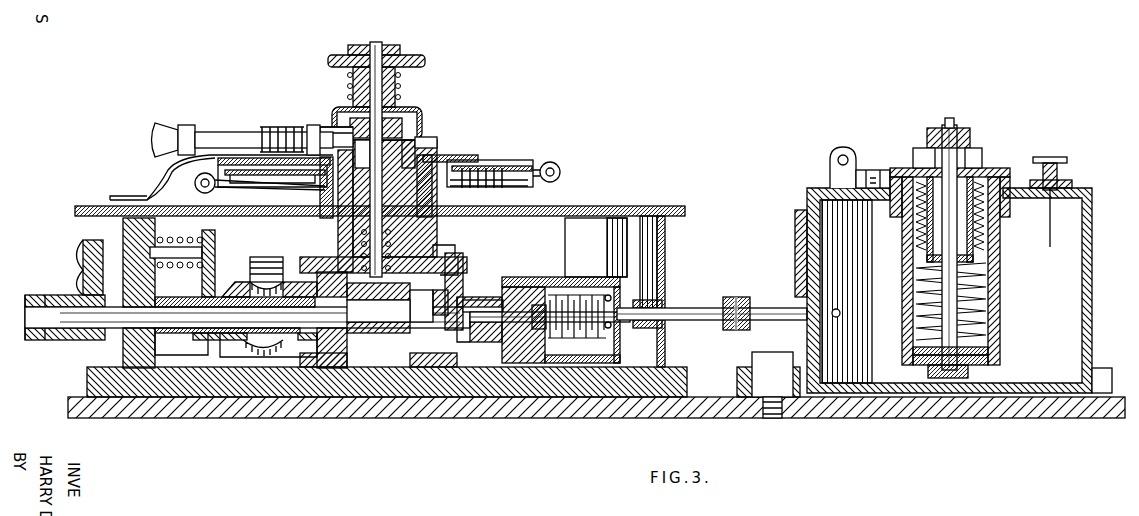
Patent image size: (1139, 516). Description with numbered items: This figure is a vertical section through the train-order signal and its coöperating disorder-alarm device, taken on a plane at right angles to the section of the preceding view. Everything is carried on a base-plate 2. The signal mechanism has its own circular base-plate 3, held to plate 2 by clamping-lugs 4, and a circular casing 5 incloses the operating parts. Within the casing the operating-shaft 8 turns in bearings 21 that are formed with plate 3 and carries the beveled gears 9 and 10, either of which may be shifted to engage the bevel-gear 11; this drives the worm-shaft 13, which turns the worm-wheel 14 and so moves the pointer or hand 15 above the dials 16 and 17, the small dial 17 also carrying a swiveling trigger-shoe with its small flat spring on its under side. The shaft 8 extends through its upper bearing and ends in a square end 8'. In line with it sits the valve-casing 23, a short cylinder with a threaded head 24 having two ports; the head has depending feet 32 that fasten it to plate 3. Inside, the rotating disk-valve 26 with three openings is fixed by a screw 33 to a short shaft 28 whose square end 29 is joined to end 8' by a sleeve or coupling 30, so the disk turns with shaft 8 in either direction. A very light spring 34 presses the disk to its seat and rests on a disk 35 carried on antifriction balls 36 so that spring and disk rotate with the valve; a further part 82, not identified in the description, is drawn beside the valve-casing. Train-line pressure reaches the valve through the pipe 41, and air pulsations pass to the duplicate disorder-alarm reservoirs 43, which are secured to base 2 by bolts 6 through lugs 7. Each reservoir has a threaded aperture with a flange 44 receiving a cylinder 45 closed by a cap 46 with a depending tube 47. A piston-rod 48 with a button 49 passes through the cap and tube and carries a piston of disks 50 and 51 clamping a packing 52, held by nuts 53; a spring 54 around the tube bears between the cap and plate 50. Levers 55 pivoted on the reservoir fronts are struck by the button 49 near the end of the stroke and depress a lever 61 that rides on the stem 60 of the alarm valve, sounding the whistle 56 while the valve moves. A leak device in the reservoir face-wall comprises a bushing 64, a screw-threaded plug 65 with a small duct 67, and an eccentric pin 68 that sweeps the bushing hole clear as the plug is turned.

The base-plate 2 is at (842, 419).
The independent base-plate 3 is at (675, 392).
The clamping-lugs 4 is at (90, 374).
The casing 5 is at (665, 254).
The bolts 6 is at (772, 362).
The lugs or ears 7 is at (755, 366).
The operating-shaft 8 is at (247, 303).
The square end 8' is at (505, 266).
The beveled gear 9 is at (245, 292).
The beveled gear 10 is at (323, 282).
The bevel-gear 11 is at (297, 282).
The worm-shaft 13 is at (252, 258).
The worm-wheel 14 is at (460, 285).
The pointer or hand 15 is at (170, 188).
The dial 16 is at (592, 207).
The small dial 17 is at (510, 165).
The bearing 21 is at (120, 342).
The valve-casing 23 is at (580, 360).
The head 24 is at (503, 325).
The rotating disk-valve 26 is at (570, 285).
The short shaft 28 is at (512, 300).
The square end 29 is at (517, 345).
The sleeve or coupling 30 is at (486, 302).
The depending lugs or feet 32 is at (490, 355).
The screw 33 is at (546, 345).
The spring 34 is at (575, 352).
The disk 35 is at (603, 345).
The balls 36 is at (620, 300).
The pipe 41 is at (680, 312).
The disorder-alarm reservoirs 43 is at (818, 190).
The flange 44 is at (900, 215).
The cylinder 45 is at (1000, 318).
The cap 46 is at (1005, 172).
The depending tube 47 is at (1000, 249).
The piston-rod 48 is at (955, 140).
The button 49 is at (958, 125).
The disk 50 is at (988, 352).
The disk 51 is at (968, 372).
The packing 52 is at (990, 360).
The nuts 53 is at (928, 373).
The spring 54 is at (915, 252).
The levers 55 is at (925, 147).
The whistle 56 is at (797, 236).
The stem 60 is at (872, 170).
The lever 61 is at (860, 148).
The bushing 64 is at (1072, 184).
The screw-threaded plug 65 is at (1052, 158).
The duct 67 is at (1058, 168).
The pin 68 is at (1051, 235).
The box 82 is at (545, 252).